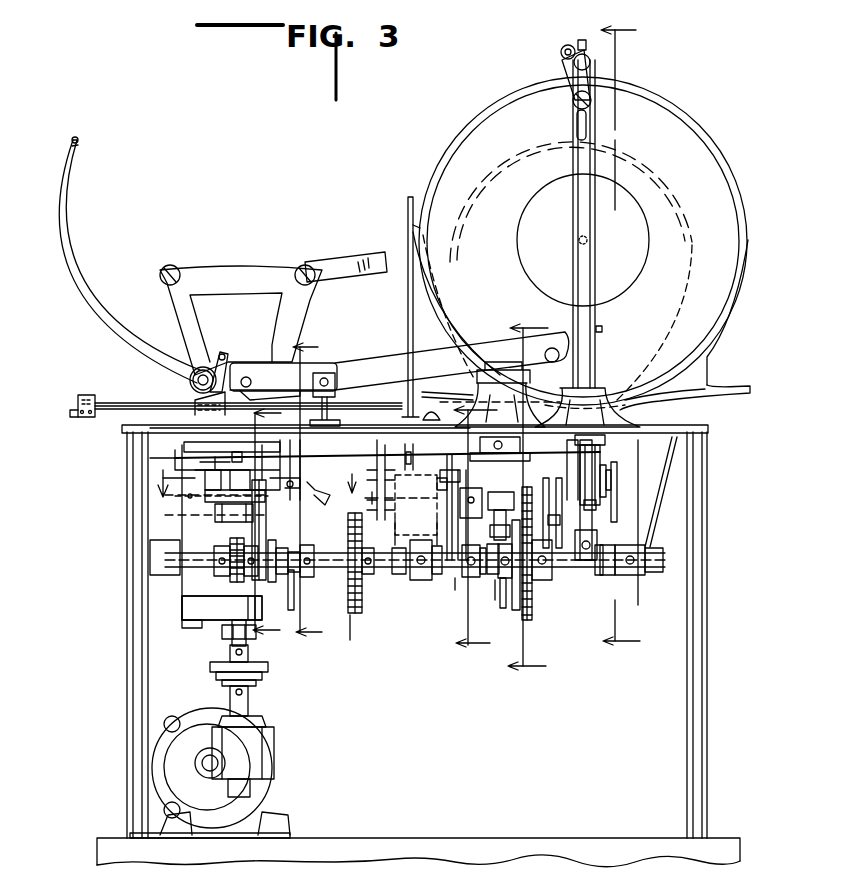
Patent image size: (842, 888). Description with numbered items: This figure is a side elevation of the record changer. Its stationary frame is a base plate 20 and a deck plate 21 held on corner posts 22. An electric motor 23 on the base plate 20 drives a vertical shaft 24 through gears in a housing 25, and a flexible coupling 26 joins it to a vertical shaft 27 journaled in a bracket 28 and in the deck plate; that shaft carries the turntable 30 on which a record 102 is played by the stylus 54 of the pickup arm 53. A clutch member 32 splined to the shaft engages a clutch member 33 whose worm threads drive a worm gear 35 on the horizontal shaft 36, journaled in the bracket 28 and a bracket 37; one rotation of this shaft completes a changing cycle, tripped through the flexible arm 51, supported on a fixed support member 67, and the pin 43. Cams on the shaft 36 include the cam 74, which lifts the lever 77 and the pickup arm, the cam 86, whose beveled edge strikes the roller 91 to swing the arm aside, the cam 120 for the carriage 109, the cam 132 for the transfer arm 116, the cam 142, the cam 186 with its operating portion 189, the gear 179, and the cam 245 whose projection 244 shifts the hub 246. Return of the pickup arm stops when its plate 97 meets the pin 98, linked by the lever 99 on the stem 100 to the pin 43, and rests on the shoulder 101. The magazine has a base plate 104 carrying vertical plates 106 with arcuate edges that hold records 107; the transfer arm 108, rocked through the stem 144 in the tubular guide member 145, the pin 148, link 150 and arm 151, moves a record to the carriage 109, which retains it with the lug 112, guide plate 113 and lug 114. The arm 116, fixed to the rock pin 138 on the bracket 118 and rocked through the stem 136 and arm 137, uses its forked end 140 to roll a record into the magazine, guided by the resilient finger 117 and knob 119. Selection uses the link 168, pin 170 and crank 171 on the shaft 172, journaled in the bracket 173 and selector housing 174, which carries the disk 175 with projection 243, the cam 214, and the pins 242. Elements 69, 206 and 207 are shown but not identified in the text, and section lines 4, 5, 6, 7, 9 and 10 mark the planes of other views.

The base plate 20 is at (505, 838).
The deck plate 21 is at (680, 426).
The corner posts 22 is at (127, 637).
The electric motor 23 is at (192, 714).
The vertical shaft 24 is at (250, 705).
The housing 25 is at (268, 752).
The flexible coupling 26 is at (266, 672).
The vertical shaft 27 is at (228, 641).
The bracket 28 is at (188, 583).
The turntable 30 is at (108, 402).
The clutch member 32 is at (215, 506).
The clutch member 33 is at (220, 518).
The worm gear 35 is at (232, 580).
The horizontal shaft 36 is at (336, 568).
The bracket 37 is at (660, 488).
The pin 43 is at (266, 490).
The flexible arm 51 is at (364, 455).
The pickup arm 53 is at (373, 358).
The stylus 54 is at (254, 362).
The fixed support member 67 is at (410, 470).
The housing base 69 is at (250, 600).
The cam 74 is at (500, 580).
The lever 77 is at (488, 500).
The cam 86 is at (538, 582).
The roller 91 is at (514, 600).
The plate 97 is at (321, 372).
The pin 98 is at (322, 446).
The lever 99 is at (314, 498).
The stem 100 is at (312, 472).
The shoulder 101 is at (332, 421).
The record 102 is at (125, 402).
The base plate 104 is at (725, 389).
The vertical plates 106 is at (725, 305).
The records 107 is at (727, 190).
The transfer arm 108 is at (483, 210).
The carriage 109 is at (70, 415).
The lug 112 is at (196, 400).
The stationary guide plate 113 is at (407, 208).
The second lug 114 is at (84, 394).
The transfer arm 116 is at (68, 245).
The resilient guide finger 117 is at (328, 268).
The bracket 118 is at (244, 274).
The guiding knob 119 is at (178, 268).
The cam 120 is at (292, 600).
The cam 132 is at (272, 582).
The vertical stem 136 is at (223, 350).
The arm 137 is at (207, 370).
The rock pin 138 is at (190, 375).
The forked upper end 140 is at (73, 140).
The cam 142 is at (588, 575).
The vertical stem 144 is at (595, 465).
The tubular guide member 145 is at (597, 285).
The pin 148 is at (594, 100).
The link 150 is at (568, 78).
The arm 151 is at (563, 47).
The link 168 is at (618, 510).
The pin 170 is at (608, 472).
The crank 171 is at (610, 490).
The rotatable shaft 172 is at (377, 500).
The bracket 173 is at (568, 468).
The selector housing 174 is at (416, 510).
The disk 175 is at (470, 580).
The gear 179 is at (533, 605).
The cam 186 is at (452, 590).
The operating portion 189 is at (418, 582).
The rod 206 is at (350, 640).
The gear 207 is at (360, 582).
The cam 214 is at (555, 560).
The pins 242 is at (436, 488).
The projection 243 is at (448, 462).
The projection 244 is at (490, 575).
The cam 245 is at (495, 600).
The hub 246 is at (465, 470).
The section line 4— 4 is at (273, 528).
The section line 5— 5 is at (468, 530).
The section line 6— 6 is at (307, 489).
The section line 7— 7 is at (528, 498).
The section line 9— 9 is at (620, 335).
The section line 10— 10 is at (261, 471).